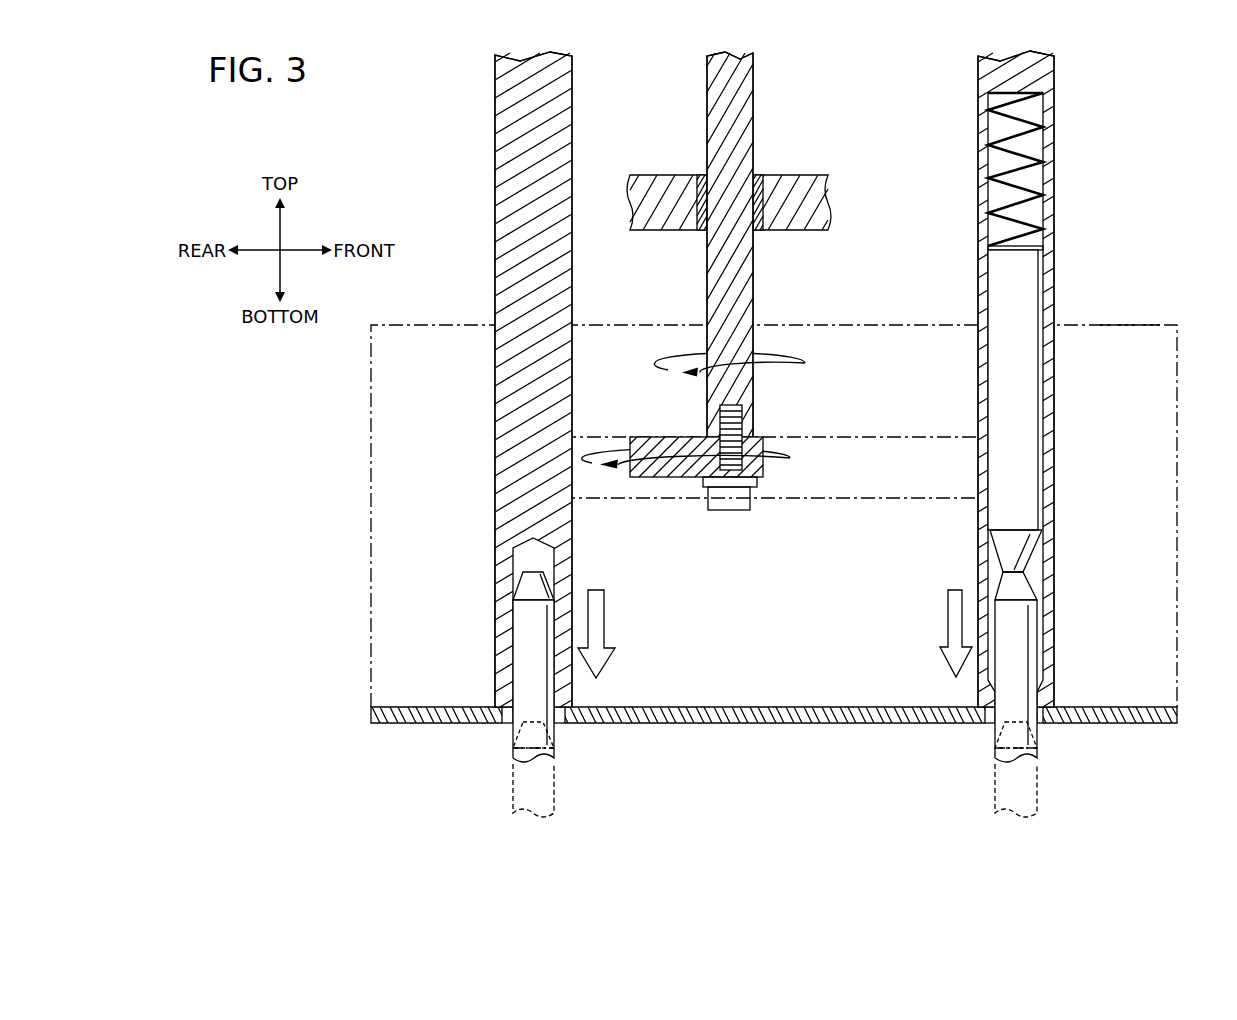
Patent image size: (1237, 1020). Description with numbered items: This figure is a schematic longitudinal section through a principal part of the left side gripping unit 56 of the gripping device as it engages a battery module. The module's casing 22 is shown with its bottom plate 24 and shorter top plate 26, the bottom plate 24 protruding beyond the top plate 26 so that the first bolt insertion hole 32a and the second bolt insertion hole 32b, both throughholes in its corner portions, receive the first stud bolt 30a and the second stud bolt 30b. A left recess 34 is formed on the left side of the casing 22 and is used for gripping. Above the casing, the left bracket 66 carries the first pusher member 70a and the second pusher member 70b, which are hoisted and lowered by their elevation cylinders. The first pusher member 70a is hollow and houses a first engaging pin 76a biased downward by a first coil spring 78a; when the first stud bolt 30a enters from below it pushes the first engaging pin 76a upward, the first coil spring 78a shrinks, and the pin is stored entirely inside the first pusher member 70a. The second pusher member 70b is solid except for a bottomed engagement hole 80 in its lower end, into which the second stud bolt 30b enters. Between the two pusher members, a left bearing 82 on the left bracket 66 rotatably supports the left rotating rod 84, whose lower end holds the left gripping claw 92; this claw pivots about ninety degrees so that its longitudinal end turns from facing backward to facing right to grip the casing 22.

The casing 22 is at (1163, 323).
The bottom plate 24 is at (1116, 707).
The top plate 26 is at (1133, 323).
The first stud bolt 30a is at (1025, 618).
The second stud bolt 30b is at (525, 620).
The first bolt insertion hole 32a is at (990, 720).
The second bolt insertion hole 32b is at (508, 720).
The left recess 34 is at (822, 440).
The left side gripping unit 56 is at (715, 281).
The left bracket 66 is at (793, 192).
The first pusher member 70a is at (1046, 431).
The second pusher member 70b is at (510, 362).
The first engaging pin 76a is at (1028, 391).
The first coil spring 78a is at (1025, 118).
The engagement hole 80 is at (513, 562).
The left bearing 82 is at (700, 186).
The left rotating rod 84 is at (746, 301).
The left gripping claw 92 is at (650, 445).